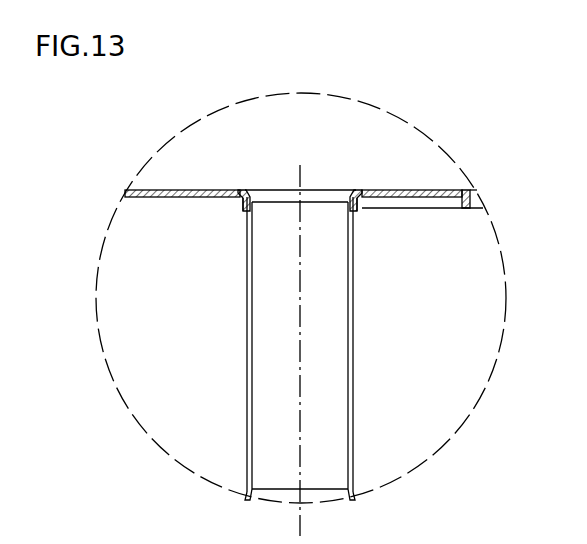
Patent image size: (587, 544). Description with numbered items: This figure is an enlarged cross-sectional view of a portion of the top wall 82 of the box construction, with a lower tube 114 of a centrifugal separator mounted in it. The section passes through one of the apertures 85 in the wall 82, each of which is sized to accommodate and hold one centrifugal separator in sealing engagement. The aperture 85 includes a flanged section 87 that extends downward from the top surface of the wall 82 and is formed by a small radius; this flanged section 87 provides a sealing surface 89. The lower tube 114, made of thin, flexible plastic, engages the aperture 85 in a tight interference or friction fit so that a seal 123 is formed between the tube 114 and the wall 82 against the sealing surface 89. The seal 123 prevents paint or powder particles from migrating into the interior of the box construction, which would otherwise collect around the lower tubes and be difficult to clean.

The top wall 82 is at (406, 189).
The aperture 85 is at (250, 192).
The flanged section 87 is at (355, 192).
The sealing surface 89 is at (244, 211).
The seal 123 is at (358, 212).
The lower tube 114 is at (356, 325).